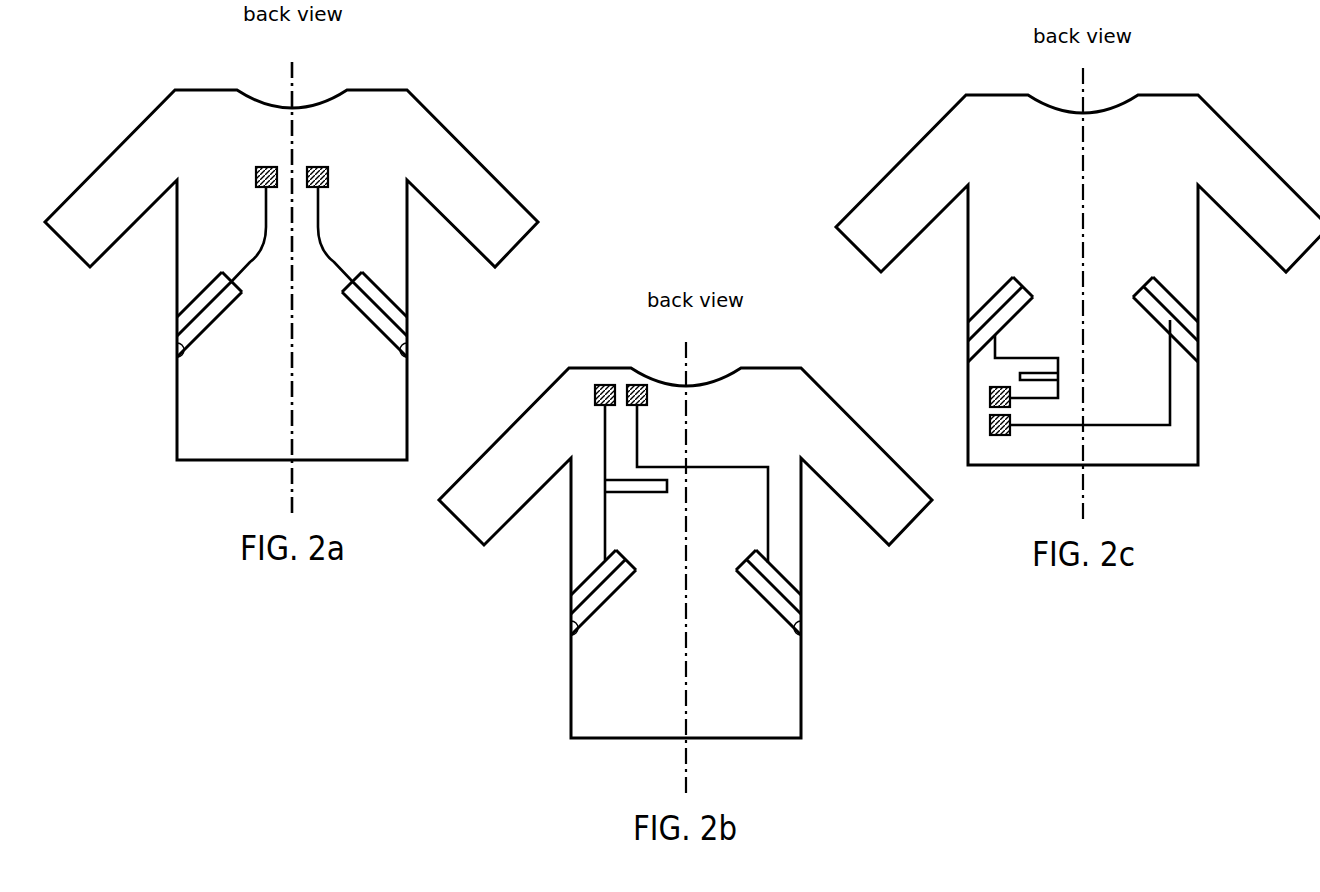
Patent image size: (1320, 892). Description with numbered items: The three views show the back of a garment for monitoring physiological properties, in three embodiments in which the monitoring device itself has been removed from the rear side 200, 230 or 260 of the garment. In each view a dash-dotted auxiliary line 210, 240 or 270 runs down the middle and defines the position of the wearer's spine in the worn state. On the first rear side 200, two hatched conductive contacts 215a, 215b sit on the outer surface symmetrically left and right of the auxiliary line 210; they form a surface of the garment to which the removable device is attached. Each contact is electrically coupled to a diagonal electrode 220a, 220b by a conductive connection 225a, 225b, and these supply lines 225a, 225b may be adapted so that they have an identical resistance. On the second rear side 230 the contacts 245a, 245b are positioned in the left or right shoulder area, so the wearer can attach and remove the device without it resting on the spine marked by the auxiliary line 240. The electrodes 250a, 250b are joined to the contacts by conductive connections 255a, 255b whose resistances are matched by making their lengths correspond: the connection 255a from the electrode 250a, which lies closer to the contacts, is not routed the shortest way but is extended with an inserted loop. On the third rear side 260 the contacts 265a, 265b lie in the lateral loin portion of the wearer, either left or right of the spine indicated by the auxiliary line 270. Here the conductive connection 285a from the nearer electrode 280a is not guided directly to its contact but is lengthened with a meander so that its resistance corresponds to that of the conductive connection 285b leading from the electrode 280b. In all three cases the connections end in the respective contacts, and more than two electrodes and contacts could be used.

In FIG. 2a, the rear side of the garment 200 is at (185, 440).
In FIG. 2a, the auxiliary line 210 is at (293, 492).
In FIG. 2a, the conductive contact 215a is at (262, 166).
In FIG. 2a, the conductive contact 215b is at (322, 166).
In FIG. 2a, the electrode 220a is at (177, 357).
In FIG. 2a, the electrode 220b is at (407, 357).
In FIG. 2a, the conductive connection 225a is at (240, 265).
In FIG. 2a, the conductive connection 225b is at (344, 265).
In FIG. 2b, the rear side of the garment 230 is at (578, 718).
In FIG. 2b, the auxiliary line 240 is at (687, 770).
In FIG. 2b, the conductive contact 245a is at (602, 384).
In FIG. 2b, the conductive contact 245b is at (636, 384).
In FIG. 2b, the electrode 250a is at (571, 637).
In FIG. 2b, the electrode 250b is at (801, 637).
In FIG. 2b, the conductive connection 255a is at (603, 548).
In FIG. 2b, the conductive connection 255b is at (769, 548).
In FIG. 2c, the rear side of the garment 260 is at (1190, 453).
In FIG. 2c, the conductive contact 265a is at (990, 395).
In FIG. 2c, the conductive contact 265b is at (990, 425).
In FIG. 2c, the auxiliary line 270 is at (1084, 497).
In FIG. 2c, the electrode 280a is at (993, 305).
In FIG. 2c, the electrode 280b is at (1180, 305).
In FIG. 2c, the conductive connection 285a is at (1043, 357).
In FIG. 2c, the conductive connection 285b is at (1170, 410).